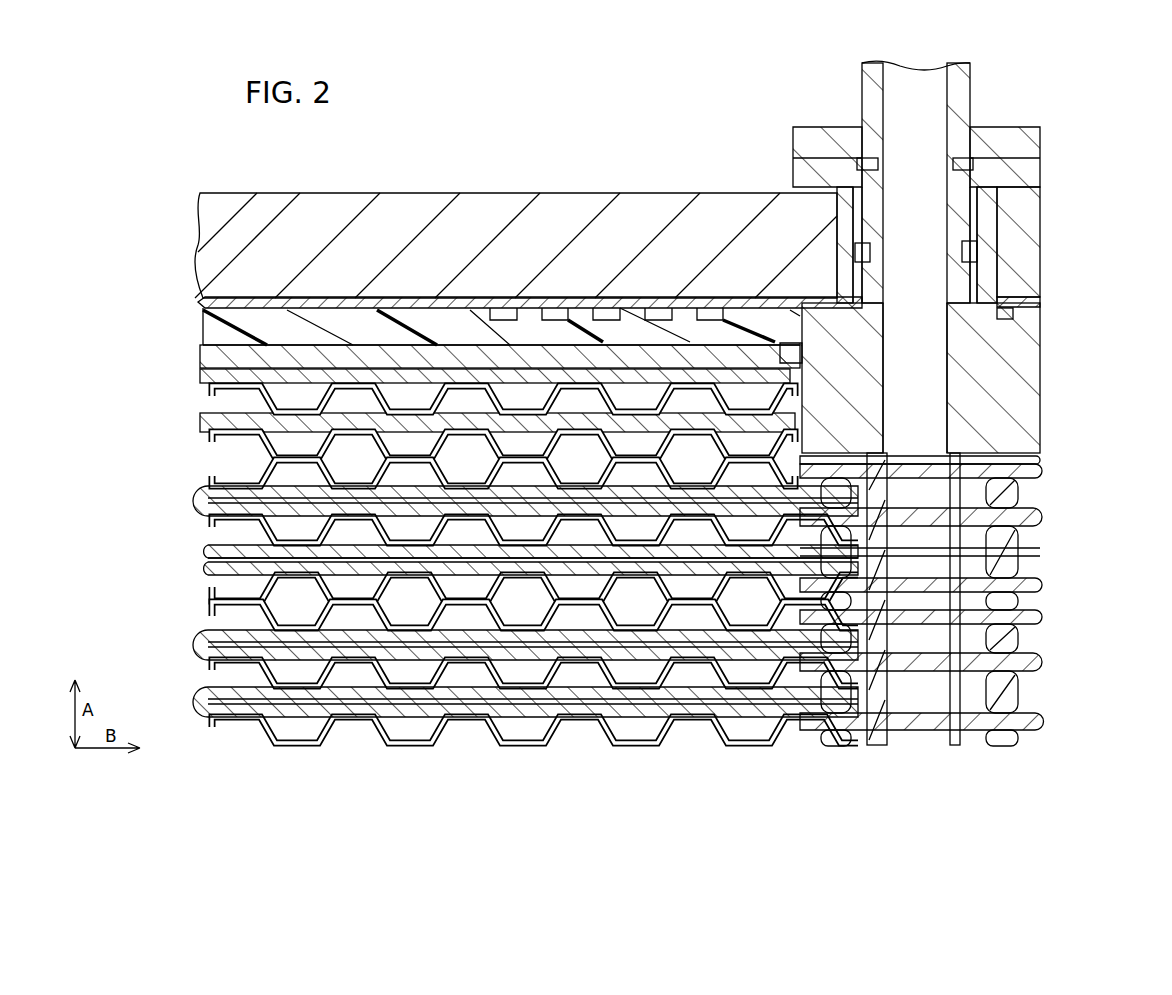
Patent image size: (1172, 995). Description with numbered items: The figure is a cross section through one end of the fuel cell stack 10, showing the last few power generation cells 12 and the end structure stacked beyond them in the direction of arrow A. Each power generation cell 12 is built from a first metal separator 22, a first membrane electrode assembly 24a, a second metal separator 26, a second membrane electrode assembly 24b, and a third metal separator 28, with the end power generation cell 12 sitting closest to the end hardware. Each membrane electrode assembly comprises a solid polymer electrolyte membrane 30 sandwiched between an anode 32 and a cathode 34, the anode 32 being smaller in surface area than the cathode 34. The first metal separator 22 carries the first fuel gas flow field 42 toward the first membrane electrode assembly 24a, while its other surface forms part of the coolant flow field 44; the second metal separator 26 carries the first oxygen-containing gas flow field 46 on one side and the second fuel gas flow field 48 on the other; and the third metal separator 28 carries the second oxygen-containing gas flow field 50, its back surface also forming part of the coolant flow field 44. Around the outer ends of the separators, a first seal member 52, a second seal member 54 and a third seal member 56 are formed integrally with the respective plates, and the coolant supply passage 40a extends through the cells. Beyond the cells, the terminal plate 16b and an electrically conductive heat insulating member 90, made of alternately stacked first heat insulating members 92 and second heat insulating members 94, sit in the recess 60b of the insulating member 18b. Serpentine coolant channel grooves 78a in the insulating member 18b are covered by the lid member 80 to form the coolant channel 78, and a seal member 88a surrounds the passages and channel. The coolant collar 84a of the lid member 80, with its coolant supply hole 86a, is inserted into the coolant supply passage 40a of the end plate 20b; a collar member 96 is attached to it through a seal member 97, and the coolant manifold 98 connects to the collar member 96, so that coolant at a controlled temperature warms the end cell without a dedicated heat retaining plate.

The fuel cell stack 10 is at (540, 117).
The power generation cell 12 is at (1108, 455).
The terminal plate 16b is at (200, 358).
The insulating member 18b is at (195, 332).
The end plate 20b is at (190, 221).
The first metal separator 22 is at (1045, 470).
The first membrane electrode assembly 24a is at (188, 489).
The second membrane electrode assembly 24b is at (208, 582).
The second metal separator 26 is at (1045, 515).
The third metal separator 28 is at (1045, 585).
The solid polymer electrolyte membrane 30 is at (196, 555).
The anode 32 is at (197, 548).
The cathode 34 is at (198, 572).
The coolant supply passage 40a is at (1015, 252).
The first fuel gas flow field 42 is at (640, 472).
The coolant flow field 44 is at (297, 607).
The first oxygen-containing gas flow field 46 is at (413, 527).
The second fuel gas flow field 48 is at (572, 518).
The second oxygen-containing gas flow field 50 is at (466, 582).
The first seal member 52 is at (1042, 462).
The second seal member 54 is at (1040, 526).
The third seal member 56 is at (1045, 597).
The recess 60b is at (800, 346).
The coolant channel 78 is at (657, 306).
The coolant channel grooves 78a is at (719, 310).
The lid member 80 is at (198, 301).
The coolant collar 84a is at (1000, 215).
The coolant supply hole 86a is at (1040, 165).
The seal member 88a is at (1012, 312).
The heat insulating member 90 is at (155, 458).
The first heat insulating member 92 is at (218, 396).
The second heat insulating member 94 is at (205, 378).
The collar member 96 is at (795, 176).
The seal member 97 is at (862, 160).
The coolant manifold 98 is at (965, 84).